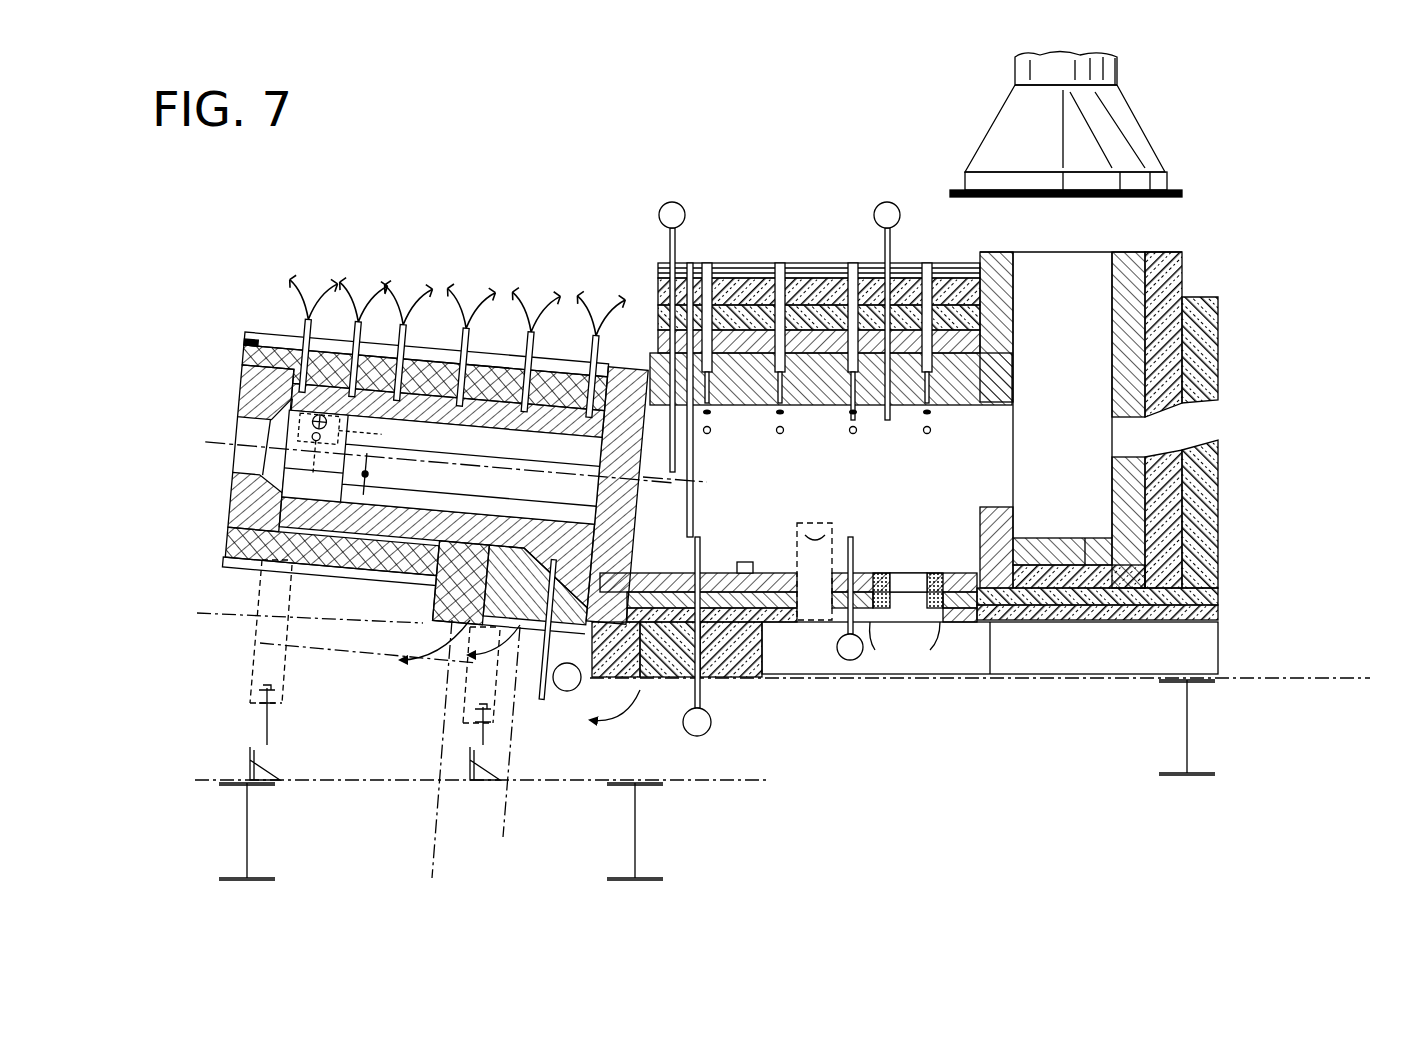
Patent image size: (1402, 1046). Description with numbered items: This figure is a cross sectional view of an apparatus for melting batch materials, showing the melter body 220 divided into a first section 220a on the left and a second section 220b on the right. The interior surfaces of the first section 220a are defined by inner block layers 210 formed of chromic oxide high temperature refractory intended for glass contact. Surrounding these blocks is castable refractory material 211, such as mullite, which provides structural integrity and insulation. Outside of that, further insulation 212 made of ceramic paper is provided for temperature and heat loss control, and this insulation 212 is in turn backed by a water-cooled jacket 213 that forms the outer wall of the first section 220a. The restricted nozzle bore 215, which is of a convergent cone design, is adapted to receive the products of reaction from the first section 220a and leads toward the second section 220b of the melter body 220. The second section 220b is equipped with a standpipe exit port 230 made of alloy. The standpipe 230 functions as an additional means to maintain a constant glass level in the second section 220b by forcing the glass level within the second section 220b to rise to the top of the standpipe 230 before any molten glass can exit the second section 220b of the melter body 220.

The inner block layers 210 is at (262, 387).
The castable refractory material 211 is at (262, 354).
The insulation 212 is at (248, 340).
The water-cooled jacket 213 is at (262, 333).
The restricted nozzle bore 215 is at (723, 502).
The melter body 220 is at (618, 202).
The first section 220a is at (282, 318).
The second section 220b is at (1203, 247).
The standpipe exit port 230 is at (820, 543).